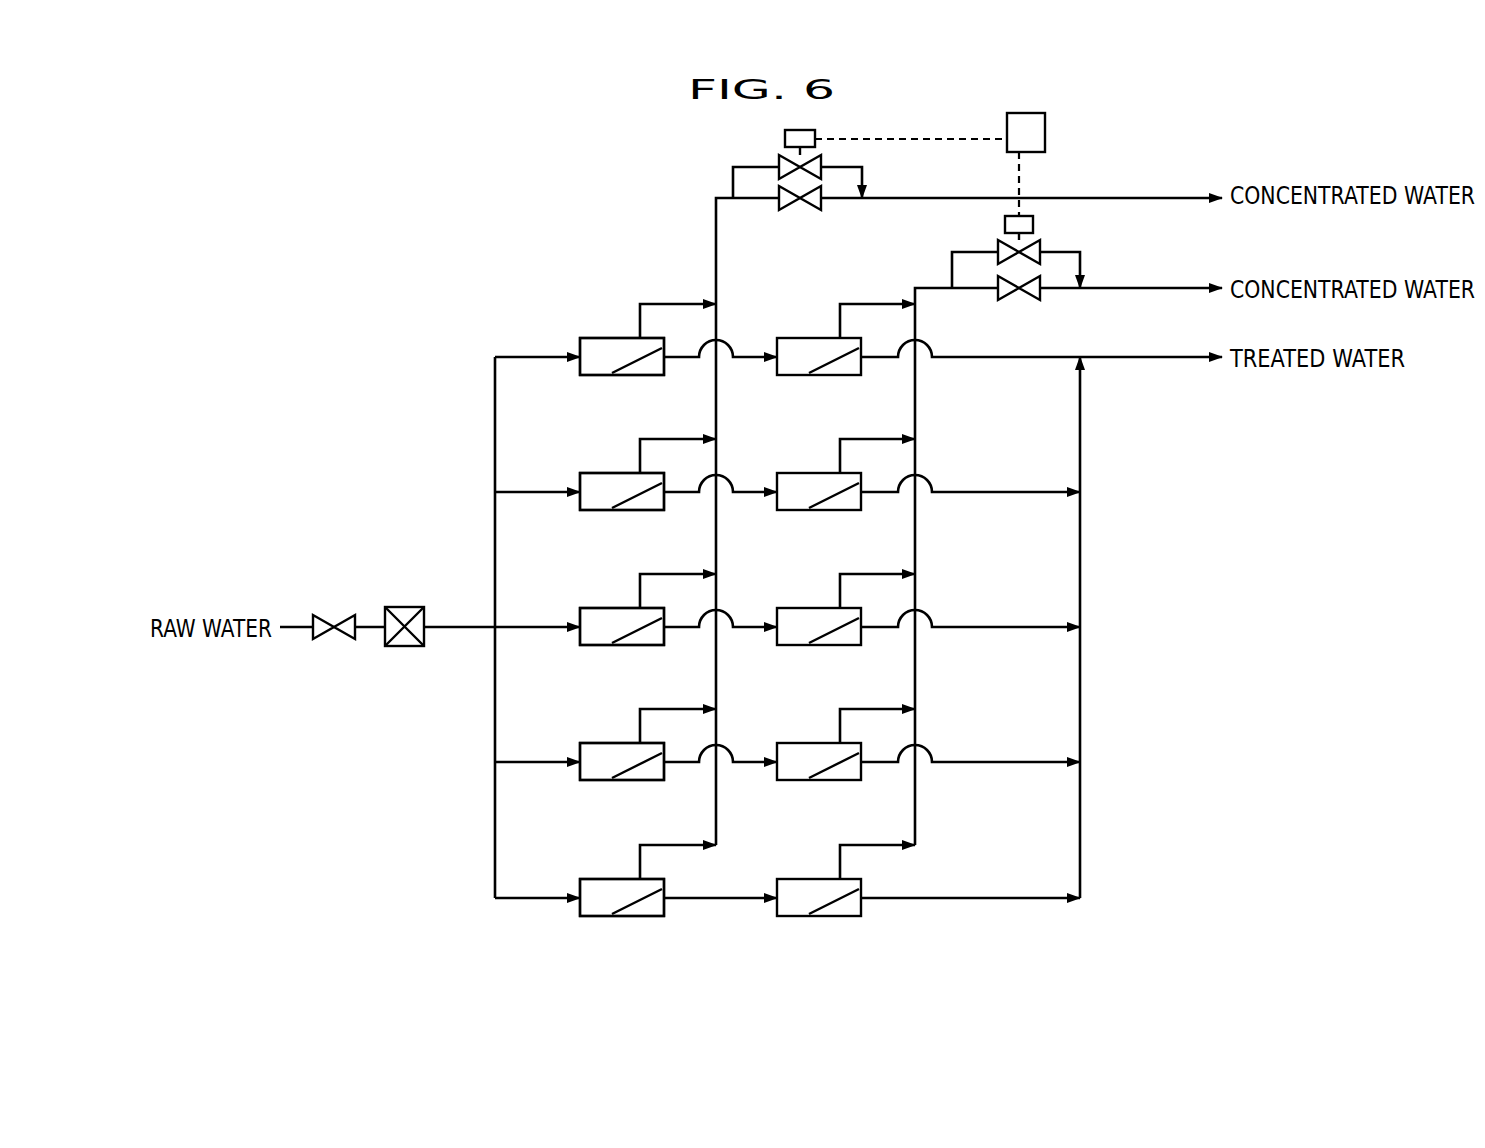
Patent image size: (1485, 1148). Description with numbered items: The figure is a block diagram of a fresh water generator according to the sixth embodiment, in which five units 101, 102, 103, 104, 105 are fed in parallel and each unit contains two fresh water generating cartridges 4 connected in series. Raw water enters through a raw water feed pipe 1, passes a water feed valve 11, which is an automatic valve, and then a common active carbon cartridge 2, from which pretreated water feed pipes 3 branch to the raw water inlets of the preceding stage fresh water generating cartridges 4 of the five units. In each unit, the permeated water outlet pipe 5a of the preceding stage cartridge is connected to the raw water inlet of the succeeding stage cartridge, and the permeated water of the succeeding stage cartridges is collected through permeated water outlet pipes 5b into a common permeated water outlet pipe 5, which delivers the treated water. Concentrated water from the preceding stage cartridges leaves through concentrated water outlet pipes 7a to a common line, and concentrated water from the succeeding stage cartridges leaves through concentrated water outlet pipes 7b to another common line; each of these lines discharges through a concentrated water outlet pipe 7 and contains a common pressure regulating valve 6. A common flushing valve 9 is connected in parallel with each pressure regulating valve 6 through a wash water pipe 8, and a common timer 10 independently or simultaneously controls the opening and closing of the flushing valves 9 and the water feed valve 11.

The raw water feed pipe 1 is at (296, 620).
The active carbon cartridge 2 is at (402, 648).
The pretreated water feed pipe 3 is at (441, 630).
The fresh water generating cartridge 4 is at (587, 376).
The permeated water outlet pipe 5 is at (1160, 361).
The permeated water outlet pipe 5a is at (688, 356).
The permeated water outlet pipe 5b is at (990, 361).
The pressure regulating valve 6 is at (779, 204).
The concentrated water outlet pipe 7 is at (1162, 202).
The concentrated water outlet pipe 7a is at (654, 301).
The concentrated water outlet pipe 7b is at (860, 303).
The wash water pipe 8 is at (866, 180).
The flushing valve 9 is at (785, 134).
The timer 10 is at (1046, 132).
The water feed valve 11 is at (335, 640).
The unit 101 is at (574, 310).
The unit 102 is at (574, 448).
The unit 103 is at (574, 588).
The unit 104 is at (574, 726).
The unit 105 is at (574, 866).